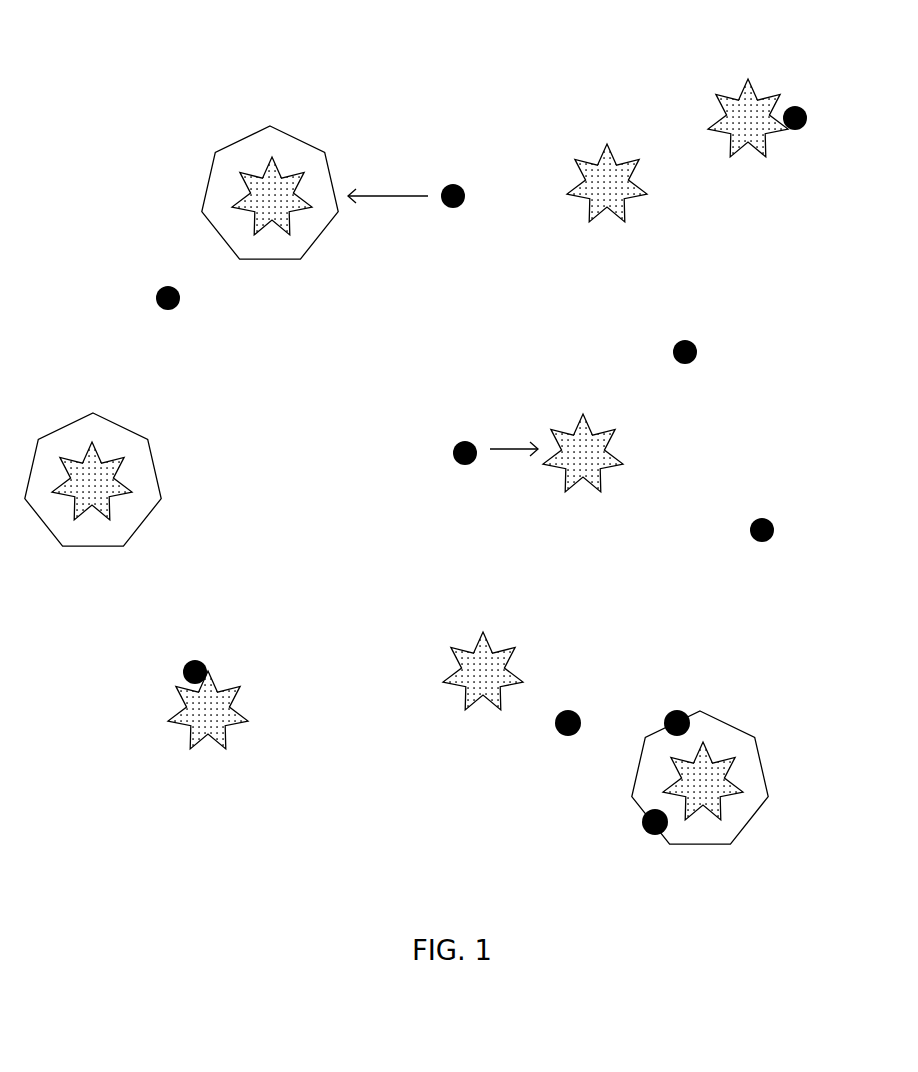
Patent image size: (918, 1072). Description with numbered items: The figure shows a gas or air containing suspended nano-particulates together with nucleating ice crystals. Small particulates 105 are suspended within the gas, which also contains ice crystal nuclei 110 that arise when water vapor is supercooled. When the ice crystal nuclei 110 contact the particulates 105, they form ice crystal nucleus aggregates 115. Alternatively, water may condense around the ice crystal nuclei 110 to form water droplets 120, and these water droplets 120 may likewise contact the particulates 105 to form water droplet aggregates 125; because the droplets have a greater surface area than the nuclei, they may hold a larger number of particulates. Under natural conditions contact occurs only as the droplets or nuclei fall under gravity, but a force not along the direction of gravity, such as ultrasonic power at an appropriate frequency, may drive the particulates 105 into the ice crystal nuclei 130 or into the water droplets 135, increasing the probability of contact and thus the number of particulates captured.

The particulates 105 is at (465, 511).
The ice crystal nuclei 110 is at (545, 427).
The ice crystal nucleus aggregates 115 is at (487, 414).
The water droplets 120 is at (181, 352).
The water droplet aggregates 125 is at (700, 799).
The ice crystal nuclei 130 is at (538, 453).
The water droplets 135 is at (406, 208).